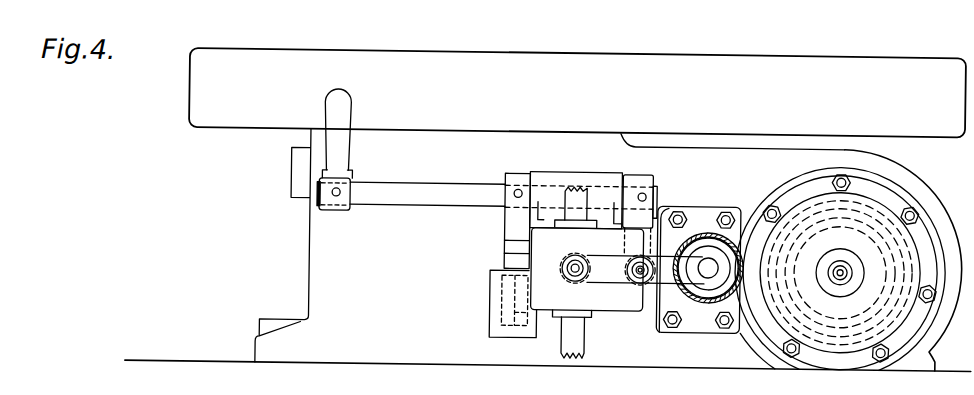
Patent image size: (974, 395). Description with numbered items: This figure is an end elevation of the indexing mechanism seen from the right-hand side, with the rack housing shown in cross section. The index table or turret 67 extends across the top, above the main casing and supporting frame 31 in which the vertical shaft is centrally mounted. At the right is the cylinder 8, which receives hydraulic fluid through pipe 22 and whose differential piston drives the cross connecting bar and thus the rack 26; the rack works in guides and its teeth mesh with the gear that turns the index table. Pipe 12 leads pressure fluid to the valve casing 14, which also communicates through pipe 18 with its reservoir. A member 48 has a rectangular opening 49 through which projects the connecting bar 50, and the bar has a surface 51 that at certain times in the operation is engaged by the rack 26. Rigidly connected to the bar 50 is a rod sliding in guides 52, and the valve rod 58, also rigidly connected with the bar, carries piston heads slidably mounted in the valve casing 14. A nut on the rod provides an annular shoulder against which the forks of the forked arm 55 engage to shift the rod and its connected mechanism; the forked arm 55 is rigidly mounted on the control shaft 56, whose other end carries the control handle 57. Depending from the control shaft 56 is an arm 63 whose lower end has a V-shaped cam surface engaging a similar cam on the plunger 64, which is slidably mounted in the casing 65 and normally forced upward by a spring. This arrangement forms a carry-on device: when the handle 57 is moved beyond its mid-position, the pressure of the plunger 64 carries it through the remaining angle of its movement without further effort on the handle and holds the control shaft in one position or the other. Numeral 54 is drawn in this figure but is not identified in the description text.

The cylinder 8 is at (943, 178).
The pipe 12 is at (586, 182).
The valve casing 14 is at (547, 224).
The pipe 18 is at (581, 338).
The pipe 22 is at (836, 255).
The rack 26 is at (711, 243).
The main casing and supporting frame 31 is at (319, 234).
The member with rectangular opening 48 is at (739, 218).
The rectangular opening 49 is at (694, 293).
The connecting bar 50 is at (661, 312).
The surface 51 is at (644, 277).
The guides 52 is at (661, 200).
The pin 54 is at (631, 250).
The forked arm 55 is at (639, 181).
The control shaft 56 is at (410, 179).
The control handle 57 is at (348, 111).
The valve rod 58 is at (578, 253).
The arm 63 is at (506, 229).
The plunger 64 is at (506, 254).
The casing 65 is at (491, 293).
The index table 67 is at (195, 98).